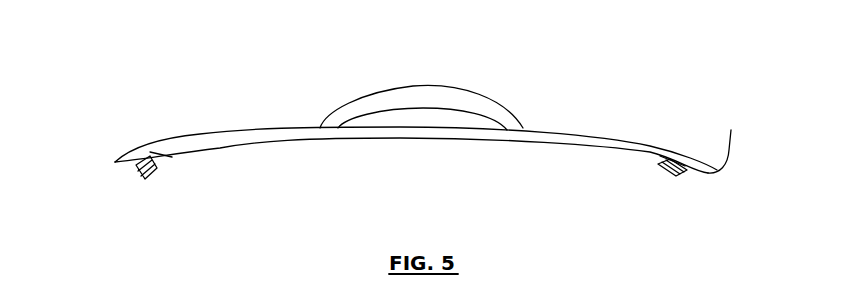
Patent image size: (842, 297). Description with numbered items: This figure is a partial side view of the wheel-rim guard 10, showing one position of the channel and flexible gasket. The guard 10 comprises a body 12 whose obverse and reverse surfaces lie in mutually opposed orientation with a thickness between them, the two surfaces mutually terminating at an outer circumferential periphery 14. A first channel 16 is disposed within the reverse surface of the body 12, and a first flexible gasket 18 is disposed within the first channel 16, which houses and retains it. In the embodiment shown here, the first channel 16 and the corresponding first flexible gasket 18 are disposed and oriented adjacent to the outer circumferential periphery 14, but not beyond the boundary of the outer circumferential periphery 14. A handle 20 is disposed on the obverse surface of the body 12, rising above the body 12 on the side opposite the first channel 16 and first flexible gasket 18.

The wheel-rim guard 10 is at (102, 84).
The body 12 is at (200, 137).
The outer circumferential periphery 14 is at (736, 136).
The first channel 16 is at (158, 155).
The first flexible gasket 18 is at (150, 169).
The handle 20 is at (502, 101).